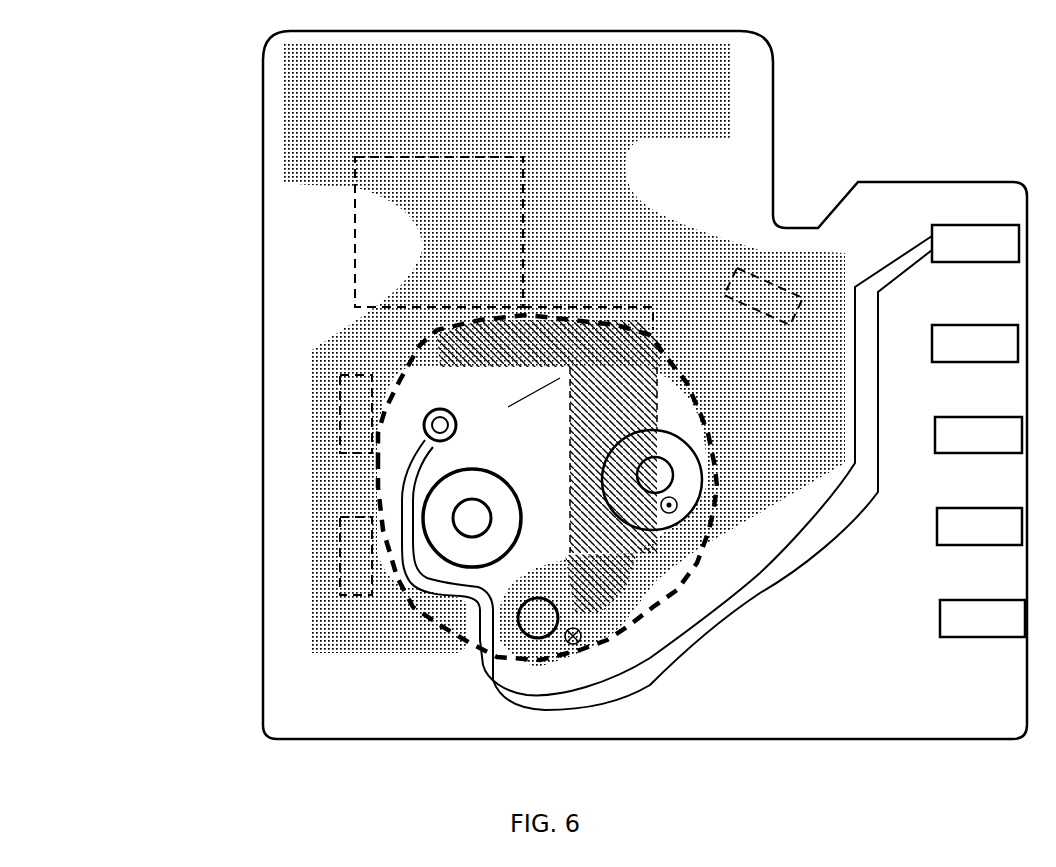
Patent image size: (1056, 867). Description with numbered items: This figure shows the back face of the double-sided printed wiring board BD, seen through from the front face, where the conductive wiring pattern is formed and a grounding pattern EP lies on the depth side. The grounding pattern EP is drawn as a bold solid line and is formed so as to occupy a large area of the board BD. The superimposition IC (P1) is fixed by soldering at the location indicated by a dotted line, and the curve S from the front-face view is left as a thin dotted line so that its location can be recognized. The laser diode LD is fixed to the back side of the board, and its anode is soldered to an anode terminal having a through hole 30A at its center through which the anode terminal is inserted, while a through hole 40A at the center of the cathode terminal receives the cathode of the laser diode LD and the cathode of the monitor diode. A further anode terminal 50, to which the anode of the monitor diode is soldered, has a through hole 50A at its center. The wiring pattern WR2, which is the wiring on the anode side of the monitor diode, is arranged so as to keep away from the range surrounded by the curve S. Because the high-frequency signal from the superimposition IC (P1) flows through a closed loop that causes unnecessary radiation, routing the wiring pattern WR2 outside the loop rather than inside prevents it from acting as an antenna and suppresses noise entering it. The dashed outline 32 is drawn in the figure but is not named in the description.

The double-sided printed wiring board BD is at (760, 58).
The grounding pattern EP is at (302, 115).
The curve S is at (657, 402).
The superimposition IC P1 is at (353, 232).
The laser diode LD is at (367, 487).
The seal member 32 is at (650, 327).
The wiring pattern WR2 is at (778, 577).
The anode terminal 50 is at (447, 533).
The through hole 50A is at (495, 510).
The through hole 30A is at (673, 437).
The through hole 40A is at (533, 625).